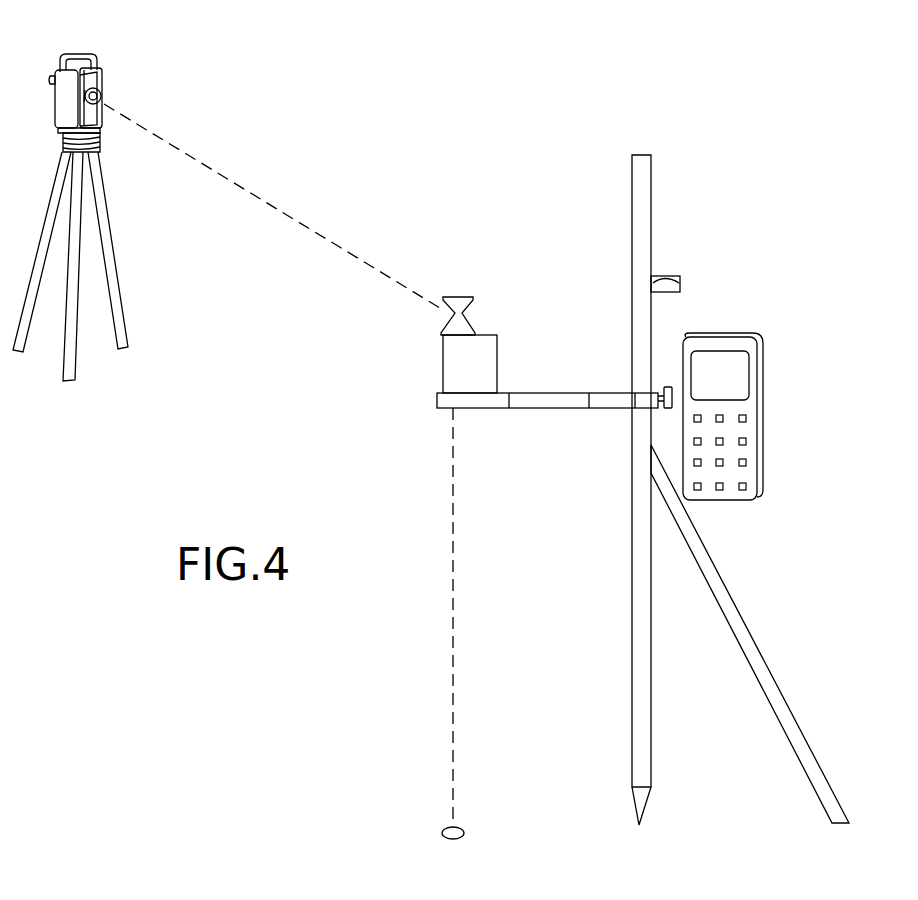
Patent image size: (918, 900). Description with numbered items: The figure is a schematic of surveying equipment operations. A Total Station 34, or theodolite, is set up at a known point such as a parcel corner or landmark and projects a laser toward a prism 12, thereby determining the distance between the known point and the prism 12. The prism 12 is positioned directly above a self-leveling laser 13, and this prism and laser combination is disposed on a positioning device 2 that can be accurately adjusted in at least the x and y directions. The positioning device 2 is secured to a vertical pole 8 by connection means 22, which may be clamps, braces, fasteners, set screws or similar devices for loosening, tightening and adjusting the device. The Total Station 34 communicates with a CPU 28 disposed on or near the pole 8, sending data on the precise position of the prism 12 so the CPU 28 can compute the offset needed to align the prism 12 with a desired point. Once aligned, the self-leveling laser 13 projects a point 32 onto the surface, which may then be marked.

The positioning device 2 is at (542, 398).
The pole 8 is at (650, 248).
The prism 12 is at (457, 297).
The self-leveling laser 13 is at (453, 372).
The connection means 22 is at (645, 400).
The CPU 28 is at (748, 407).
The point 32 is at (449, 836).
The Total Station 34 is at (158, 46).